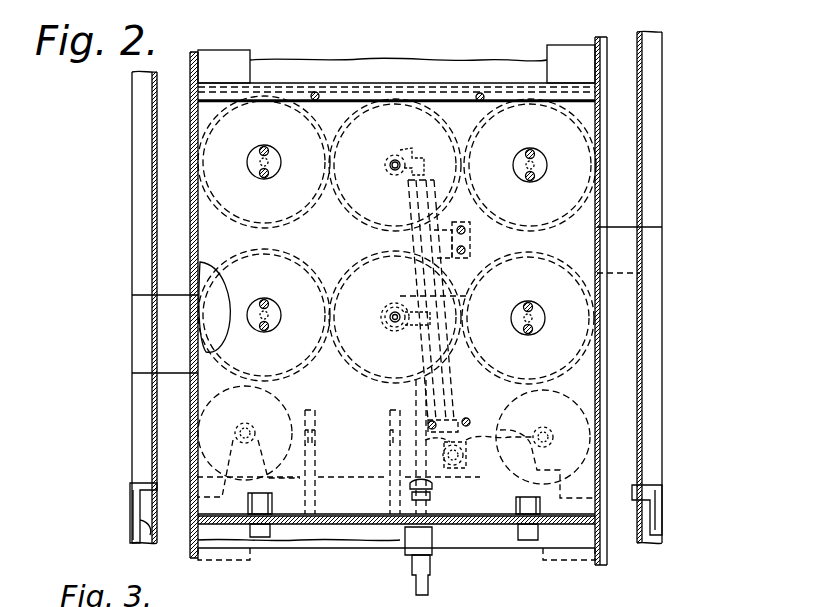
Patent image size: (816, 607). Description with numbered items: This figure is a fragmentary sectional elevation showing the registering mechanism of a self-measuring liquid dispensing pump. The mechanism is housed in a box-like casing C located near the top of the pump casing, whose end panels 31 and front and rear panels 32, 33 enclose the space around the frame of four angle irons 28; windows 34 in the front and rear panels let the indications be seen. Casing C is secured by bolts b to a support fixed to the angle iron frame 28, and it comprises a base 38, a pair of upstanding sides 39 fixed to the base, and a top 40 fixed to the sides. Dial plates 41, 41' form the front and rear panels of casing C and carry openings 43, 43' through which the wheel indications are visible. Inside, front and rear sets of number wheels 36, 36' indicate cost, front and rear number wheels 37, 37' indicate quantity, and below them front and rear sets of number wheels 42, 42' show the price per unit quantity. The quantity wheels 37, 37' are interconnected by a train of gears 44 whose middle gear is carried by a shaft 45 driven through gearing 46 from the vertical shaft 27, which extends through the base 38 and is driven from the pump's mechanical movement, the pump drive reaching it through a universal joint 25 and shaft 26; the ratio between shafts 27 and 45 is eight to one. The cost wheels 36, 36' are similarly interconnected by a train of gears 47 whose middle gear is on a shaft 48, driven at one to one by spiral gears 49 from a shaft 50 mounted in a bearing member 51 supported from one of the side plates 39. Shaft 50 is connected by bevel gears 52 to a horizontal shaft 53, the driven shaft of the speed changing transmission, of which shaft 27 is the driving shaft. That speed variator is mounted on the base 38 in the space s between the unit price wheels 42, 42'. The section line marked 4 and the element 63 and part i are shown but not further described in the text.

The angle irons 28 is at (235, 52).
The box-like casing C is at (290, 85).
The upstanding sides 39 is at (330, 110).
The end panels 31 is at (430, 62).
The top 40 is at (455, 95).
The front set of number wheels 36 is at (210, 162).
The rear set of number wheels 36' is at (586, 165).
The openings 43 is at (185, 313).
The openings 43' is at (610, 302).
The spiral gears 49 is at (405, 153).
The shaft 48 is at (388, 165).
The train of gears 47 is at (320, 208).
The train of gears 44 is at (215, 280).
The rear dial plate 41' is at (651, 219).
The front dial plate 41 is at (145, 366).
The front number wheels 37 is at (210, 315).
The rear number wheels 37' is at (584, 318).
The shaft 50 is at (466, 295).
The shaft 45 is at (388, 317).
The gearing 46 is at (403, 330).
The section line 4 is at (120, 378).
The windows 34 is at (152, 435).
The front set of number wheels 42 is at (192, 441).
The rear set of number wheels 42' is at (599, 444).
The front panel 32 is at (132, 505).
The rear panel 33 is at (660, 508).
The vertical shaft 27 is at (418, 400).
The bearing member 51 is at (458, 415).
The bevel gears 52 is at (500, 440).
The roller 63 is at (428, 485).
The horizontal shaft 53 is at (463, 465).
The bolts b is at (297, 538).
The plate i is at (305, 540).
The space s is at (360, 447).
The universal joint 25 is at (410, 548).
The shaft 26 is at (430, 580).
The base 38 is at (572, 520).